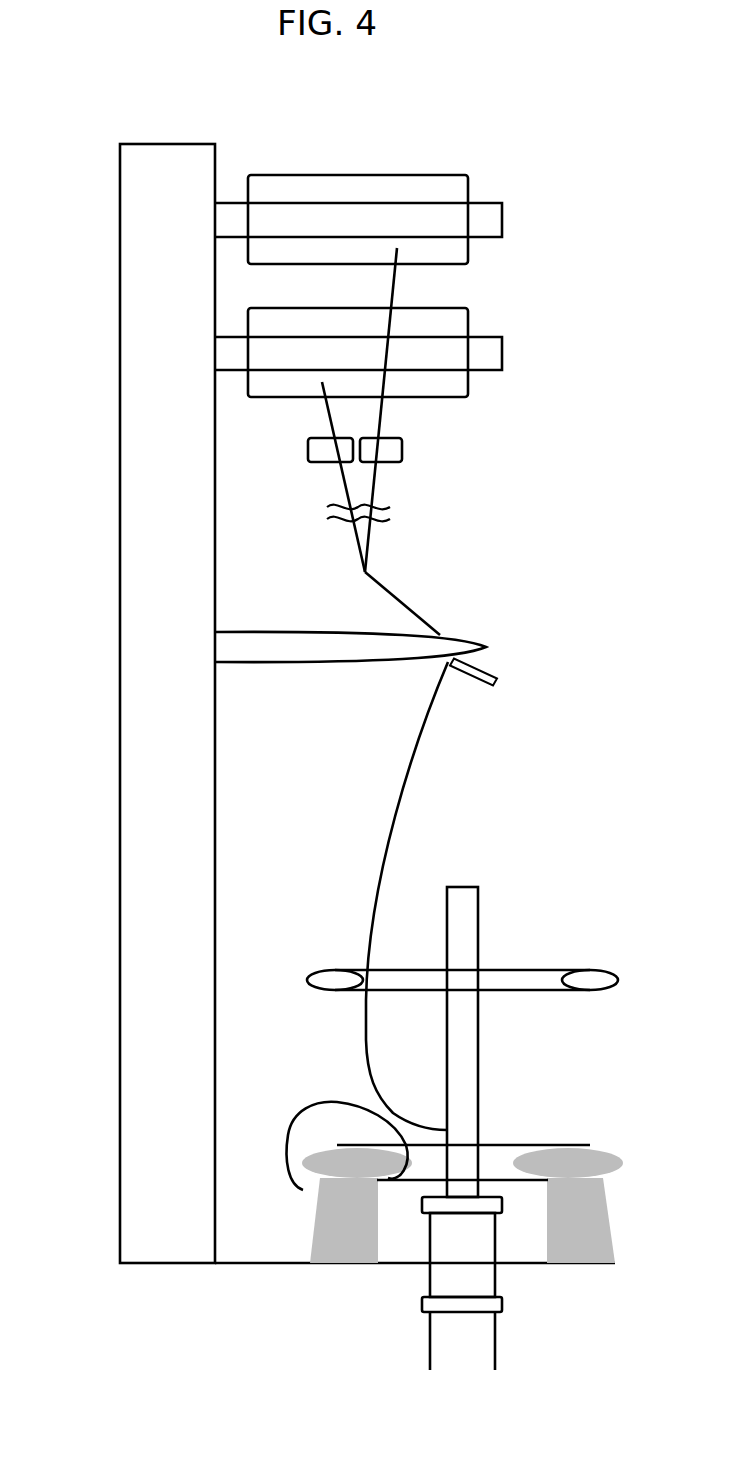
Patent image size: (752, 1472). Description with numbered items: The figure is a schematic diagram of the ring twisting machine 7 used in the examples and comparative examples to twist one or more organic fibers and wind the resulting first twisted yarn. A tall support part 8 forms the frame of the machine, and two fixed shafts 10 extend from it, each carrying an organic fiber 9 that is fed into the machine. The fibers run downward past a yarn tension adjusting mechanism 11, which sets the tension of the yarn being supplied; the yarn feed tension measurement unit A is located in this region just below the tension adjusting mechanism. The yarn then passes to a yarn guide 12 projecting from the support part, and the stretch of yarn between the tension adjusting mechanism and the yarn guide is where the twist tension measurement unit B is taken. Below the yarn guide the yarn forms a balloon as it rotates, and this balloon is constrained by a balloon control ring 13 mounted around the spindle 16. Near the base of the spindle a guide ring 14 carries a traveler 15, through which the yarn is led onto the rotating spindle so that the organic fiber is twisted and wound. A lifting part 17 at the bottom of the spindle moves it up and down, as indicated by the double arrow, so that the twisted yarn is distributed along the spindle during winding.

The ring twisting machine 7 is at (547, 166).
The support part 8 is at (152, 368).
The organic fiber 9 is at (452, 252).
The fixed shaft 10 is at (490, 222).
The yarn tension adjusting mechanism 11 is at (340, 452).
The yarn guide 12 is at (453, 645).
The balloon control ring 13 is at (593, 973).
The guide ring 14 is at (593, 1158).
The traveler 15 is at (292, 1115).
The spindle 16 is at (450, 1280).
The lifting part 17 is at (547, 1304).
The yarn feed tension measurement unit A is at (356, 475).
The twist tension measurement unit B is at (414, 597).